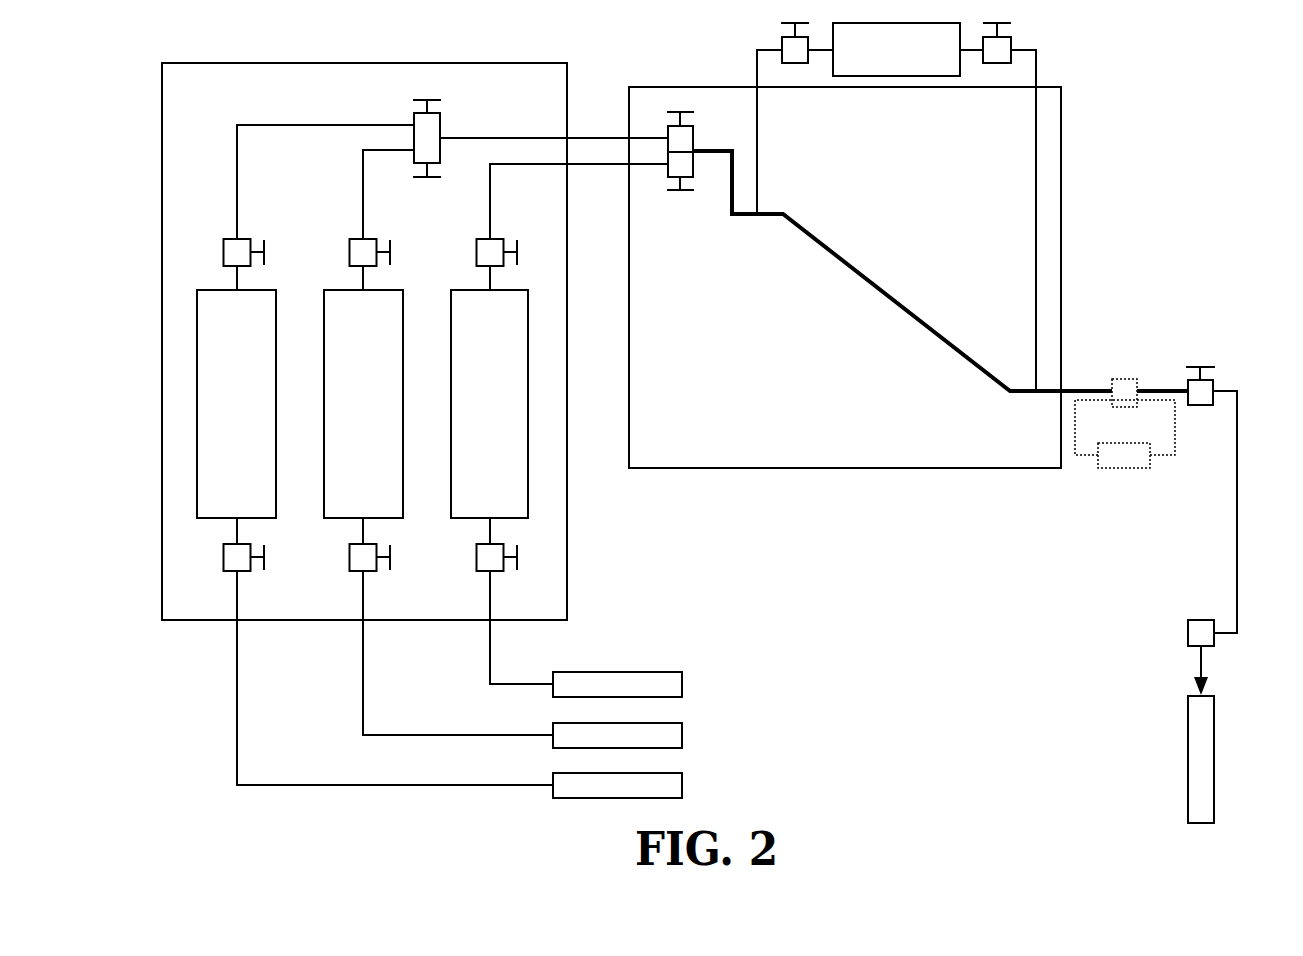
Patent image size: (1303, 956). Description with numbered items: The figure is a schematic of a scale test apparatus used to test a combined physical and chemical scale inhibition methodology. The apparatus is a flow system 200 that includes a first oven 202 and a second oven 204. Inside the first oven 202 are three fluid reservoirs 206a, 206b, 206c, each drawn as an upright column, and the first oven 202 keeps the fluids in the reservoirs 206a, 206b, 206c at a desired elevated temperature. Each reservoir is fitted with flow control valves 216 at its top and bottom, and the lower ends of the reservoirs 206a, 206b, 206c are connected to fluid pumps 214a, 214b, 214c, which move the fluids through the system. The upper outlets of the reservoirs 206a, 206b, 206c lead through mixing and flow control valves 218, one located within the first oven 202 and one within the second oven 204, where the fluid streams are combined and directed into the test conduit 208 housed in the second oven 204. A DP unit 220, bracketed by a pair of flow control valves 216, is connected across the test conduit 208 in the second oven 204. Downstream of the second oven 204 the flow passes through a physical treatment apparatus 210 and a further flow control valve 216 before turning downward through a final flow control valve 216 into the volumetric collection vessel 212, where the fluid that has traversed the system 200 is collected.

The flow system 200 is at (1158, 186).
The first oven 202 is at (568, 519).
The second oven 204 is at (731, 469).
The fluid reservoir 206a is at (236, 404).
The fluid reservoir 206b is at (363, 404).
The fluid reservoir 206c is at (489, 404).
The test conduit 208 is at (883, 300).
The physical treatment apparatus 210 is at (1128, 356).
The volumetric collection vessel 212 is at (1187, 760).
The fluid pump 214a is at (684, 684).
The fluid pump 214b is at (684, 735).
The fluid pump 214c is at (684, 785).
The flow control valve 216 is at (237, 250).
The mixing and flow control valve 218 is at (427, 137).
The DP unit 220 is at (896, 49).